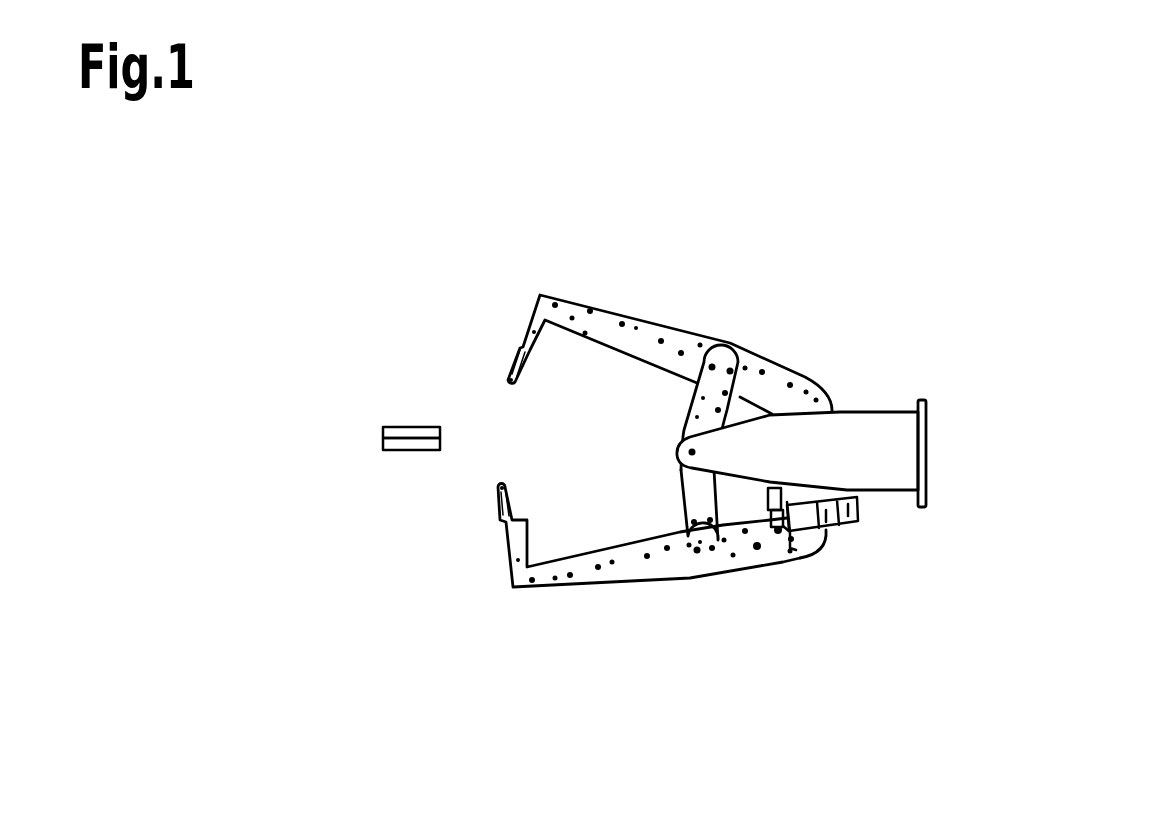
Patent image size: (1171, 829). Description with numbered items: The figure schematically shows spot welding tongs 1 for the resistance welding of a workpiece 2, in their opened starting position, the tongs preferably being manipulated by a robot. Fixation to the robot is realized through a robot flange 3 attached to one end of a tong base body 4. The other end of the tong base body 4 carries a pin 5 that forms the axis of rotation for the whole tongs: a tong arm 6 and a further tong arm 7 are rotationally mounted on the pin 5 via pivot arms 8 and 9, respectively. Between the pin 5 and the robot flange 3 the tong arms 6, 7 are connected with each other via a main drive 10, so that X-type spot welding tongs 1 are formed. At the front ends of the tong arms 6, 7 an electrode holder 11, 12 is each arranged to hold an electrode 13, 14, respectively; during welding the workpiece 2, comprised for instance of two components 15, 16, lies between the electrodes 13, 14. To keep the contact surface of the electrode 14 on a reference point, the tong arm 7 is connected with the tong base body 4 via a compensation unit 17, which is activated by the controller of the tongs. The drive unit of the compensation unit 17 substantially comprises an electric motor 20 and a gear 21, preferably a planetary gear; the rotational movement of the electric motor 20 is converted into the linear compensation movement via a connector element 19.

The spot welding tongs 1 is at (1052, 265).
The workpiece 2 is at (372, 390).
The robot flange 3 is at (922, 503).
The tong base body 4 is at (862, 435).
The pin 5 is at (692, 452).
The tong arm 6 is at (680, 345).
The further tong arm 7 is at (630, 572).
The pivot arm 8 is at (722, 380).
The pivot arm 9 is at (706, 555).
The main drive 10 is at (823, 533).
The electrode holder 11 is at (515, 358).
The electrode holder 12 is at (498, 513).
The electrode 13 is at (510, 378).
The electrode 14 is at (500, 490).
The component 15 is at (417, 420).
The component 16 is at (415, 447).
The compensation unit 17 is at (890, 541).
The connector element 19 is at (778, 555).
The electric motor 20 is at (847, 510).
The gear 21 is at (805, 517).